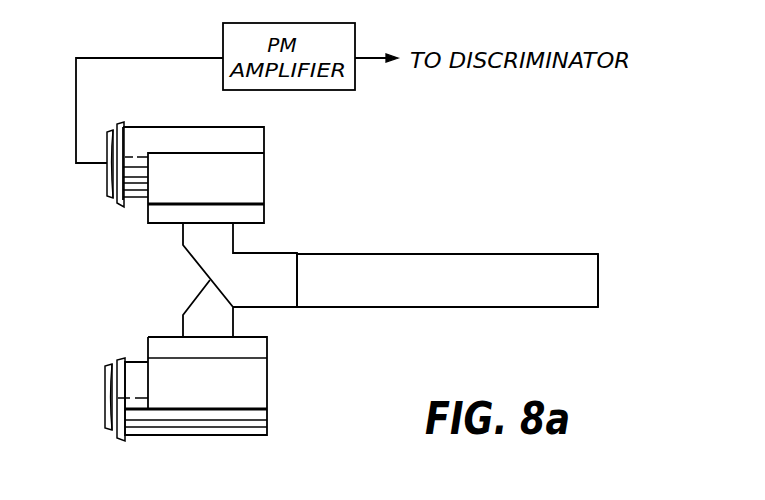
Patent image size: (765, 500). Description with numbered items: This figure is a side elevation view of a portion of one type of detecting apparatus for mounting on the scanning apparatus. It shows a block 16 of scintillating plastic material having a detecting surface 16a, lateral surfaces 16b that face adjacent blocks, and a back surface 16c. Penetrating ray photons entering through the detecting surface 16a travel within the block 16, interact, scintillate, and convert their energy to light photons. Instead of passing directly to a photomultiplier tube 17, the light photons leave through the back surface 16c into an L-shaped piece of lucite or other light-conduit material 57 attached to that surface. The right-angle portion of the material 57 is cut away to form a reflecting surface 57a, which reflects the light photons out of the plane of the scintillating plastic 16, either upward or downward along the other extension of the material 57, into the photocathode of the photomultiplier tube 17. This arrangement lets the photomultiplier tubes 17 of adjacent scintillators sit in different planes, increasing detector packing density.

The block of scintillating plastic material 16 is at (480, 271).
The detecting surface 16a is at (598, 278).
The lateral surfaces 16b is at (478, 287).
The back surface 16c is at (296, 290).
The photomultiplier 17 is at (266, 179).
The L-shaped light conduit material 57 is at (225, 274).
The reflecting surface 57a is at (192, 262).